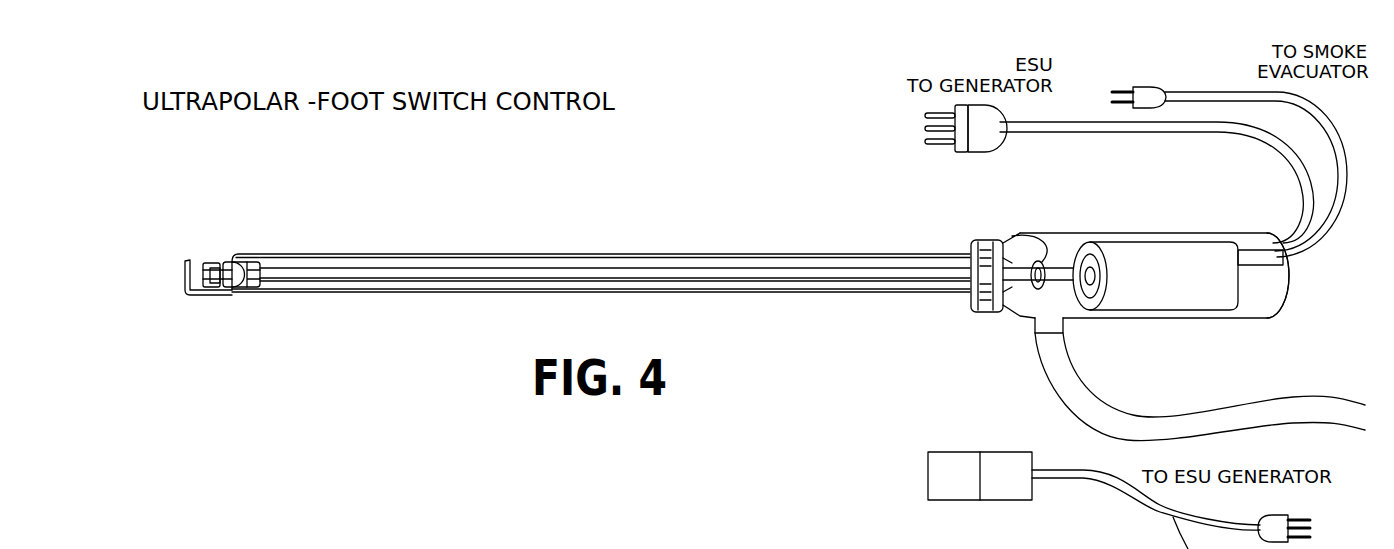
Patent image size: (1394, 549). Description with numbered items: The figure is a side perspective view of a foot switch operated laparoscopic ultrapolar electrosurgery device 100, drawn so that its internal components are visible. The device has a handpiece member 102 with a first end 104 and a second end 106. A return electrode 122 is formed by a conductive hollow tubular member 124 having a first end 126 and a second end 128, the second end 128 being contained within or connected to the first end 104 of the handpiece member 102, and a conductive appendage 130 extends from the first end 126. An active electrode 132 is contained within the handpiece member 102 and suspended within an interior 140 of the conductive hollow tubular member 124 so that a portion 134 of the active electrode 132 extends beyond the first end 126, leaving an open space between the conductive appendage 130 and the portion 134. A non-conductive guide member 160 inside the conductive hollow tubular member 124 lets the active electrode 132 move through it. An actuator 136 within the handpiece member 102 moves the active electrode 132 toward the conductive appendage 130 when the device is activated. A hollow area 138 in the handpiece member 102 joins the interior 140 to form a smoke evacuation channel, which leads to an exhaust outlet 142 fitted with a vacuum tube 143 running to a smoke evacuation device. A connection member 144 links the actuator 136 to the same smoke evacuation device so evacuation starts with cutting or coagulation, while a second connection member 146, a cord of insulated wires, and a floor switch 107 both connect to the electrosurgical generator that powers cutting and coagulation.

The laparoscopic ultrapolar electrosurgery device 100 is at (612, 181).
The handpiece member 102 is at (1220, 318).
The first end 104 is at (970, 305).
The second end 106 is at (1289, 281).
The floor switch 107 is at (997, 500).
The return electrode 122 is at (405, 294).
The conductive hollow tubular member 124 is at (395, 253).
The first end 126 is at (233, 288).
The second end 128 is at (1002, 238).
The conductive appendage 130 is at (185, 269).
The active electrode 132 is at (710, 280).
The portion of the active electrode 134 is at (204, 262).
The actuator 136 is at (1163, 295).
The hollow area 138 is at (1068, 302).
The interior 140 is at (665, 263).
The exhaust outlet 142 is at (1040, 310).
The vacuum tube 143 is at (1292, 402).
The connection member 144 is at (1317, 110).
The second connection member 146 is at (1103, 133).
The non-conductive guide member 160 is at (252, 262).